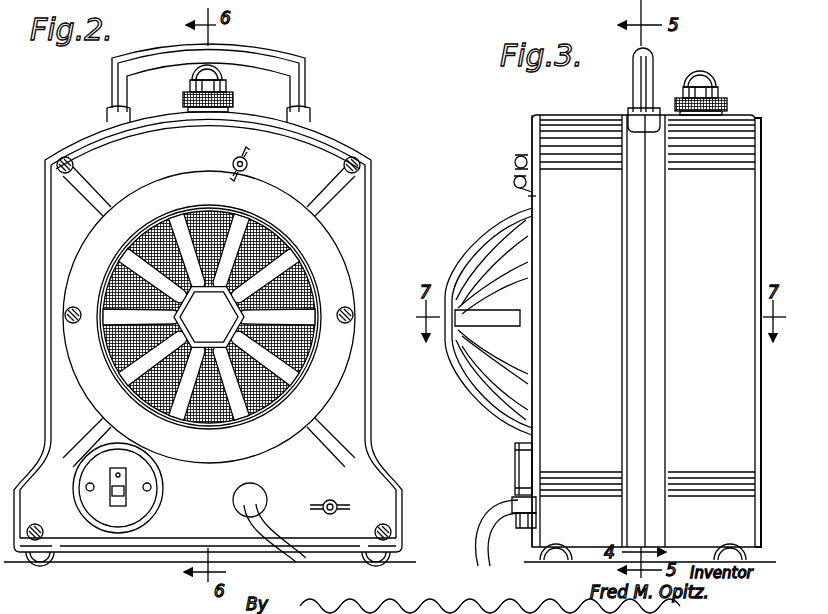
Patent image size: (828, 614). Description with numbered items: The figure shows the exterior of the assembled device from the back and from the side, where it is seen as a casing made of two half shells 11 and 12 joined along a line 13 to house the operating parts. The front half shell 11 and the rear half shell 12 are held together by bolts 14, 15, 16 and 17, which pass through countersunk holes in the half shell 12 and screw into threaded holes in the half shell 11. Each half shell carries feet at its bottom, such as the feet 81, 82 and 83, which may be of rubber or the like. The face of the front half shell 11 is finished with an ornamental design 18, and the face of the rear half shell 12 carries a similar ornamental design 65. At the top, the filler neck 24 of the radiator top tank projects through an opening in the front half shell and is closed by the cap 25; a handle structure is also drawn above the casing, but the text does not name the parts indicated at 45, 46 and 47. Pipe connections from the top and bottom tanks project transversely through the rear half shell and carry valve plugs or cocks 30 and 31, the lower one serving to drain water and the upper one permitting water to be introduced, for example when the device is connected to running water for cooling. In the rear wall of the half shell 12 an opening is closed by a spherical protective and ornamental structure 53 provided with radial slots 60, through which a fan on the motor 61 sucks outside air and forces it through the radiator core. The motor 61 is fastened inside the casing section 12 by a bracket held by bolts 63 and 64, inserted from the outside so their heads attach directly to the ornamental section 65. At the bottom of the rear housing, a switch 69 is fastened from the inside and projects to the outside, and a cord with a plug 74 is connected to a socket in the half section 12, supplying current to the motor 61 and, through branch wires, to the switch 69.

In FIG. 3, the half shell 11 is at (746, 138).
In FIG. 2, the half shell 12 is at (326, 152).
In FIG. 3, the half shell 12 is at (545, 130).
In FIG. 3, the line 13 is at (652, 243).
In FIG. 2, the bolt 14 is at (64, 157).
In FIG. 2, the bolt 15 is at (361, 169).
In FIG. 2, the bolt 16 is at (38, 562).
In FIG. 2, the bolt 17 is at (392, 534).
In FIG. 3, the ornamental design 18 is at (760, 206).
In FIG. 2, the filler neck 24 is at (236, 111).
In FIG. 3, the filler neck 24 is at (722, 112).
In FIG. 2, the cap 25 is at (192, 84).
In FIG. 3, the cap 25 is at (703, 70).
In FIG. 2, the valve plug 30 is at (233, 158).
In FIG. 3, the valve plug 30 is at (515, 160).
In FIG. 2, the valve plug 31 is at (338, 503).
In FIG. 3, the valve plug 31 is at (512, 510).
In FIG. 2, the handle 45 is at (266, 56).
In FIG. 3, the handle 45 is at (640, 94).
In FIG. 2, the handle foot 46 is at (116, 108).
In FIG. 2, the handle foot 47 is at (306, 116).
In FIG. 3, the handle foot 47 is at (628, 118).
In FIG. 2, the spherical protective and ornamental structure 53 is at (163, 196).
In FIG. 3, the spherical protective and ornamental structure 53 is at (450, 296).
In FIG. 2, the radial slot 60 is at (120, 258).
In FIG. 3, the radial slot 60 is at (514, 184).
In FIG. 3, the motor 61 is at (490, 262).
In FIG. 2, the bolt 63 is at (352, 310).
In FIG. 2, the bolt 64 is at (65, 315).
In FIG. 2, the ornamental design 65 is at (292, 200).
In FIG. 3, the ornamental design 65 is at (538, 191).
In FIG. 2, the switch 69 is at (136, 507).
In FIG. 3, the switch 69 is at (515, 448).
In FIG. 2, the plug 74 is at (262, 499).
In FIG. 3, the plug 74 is at (514, 500).
In FIG. 3, the foot 81 is at (760, 554).
In FIG. 2, the foot 82 is at (372, 562).
In FIG. 3, the foot 82 is at (556, 566).
In FIG. 2, the foot 83 is at (60, 560).